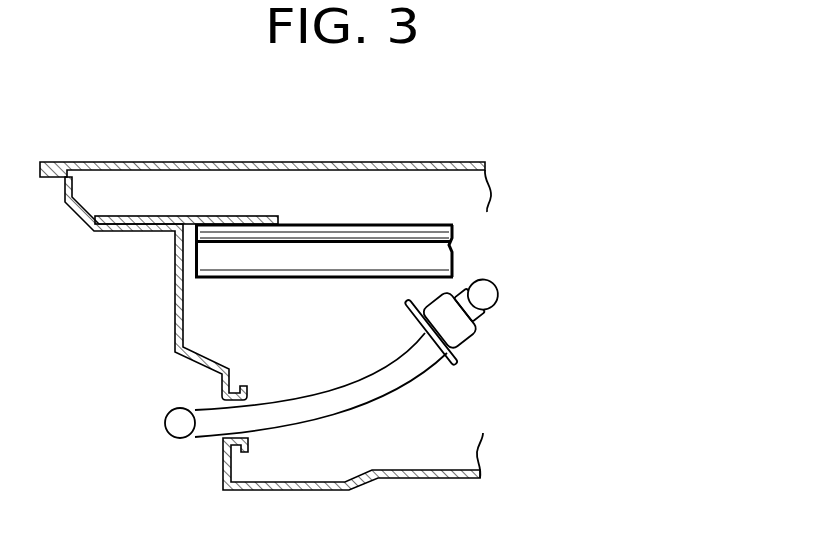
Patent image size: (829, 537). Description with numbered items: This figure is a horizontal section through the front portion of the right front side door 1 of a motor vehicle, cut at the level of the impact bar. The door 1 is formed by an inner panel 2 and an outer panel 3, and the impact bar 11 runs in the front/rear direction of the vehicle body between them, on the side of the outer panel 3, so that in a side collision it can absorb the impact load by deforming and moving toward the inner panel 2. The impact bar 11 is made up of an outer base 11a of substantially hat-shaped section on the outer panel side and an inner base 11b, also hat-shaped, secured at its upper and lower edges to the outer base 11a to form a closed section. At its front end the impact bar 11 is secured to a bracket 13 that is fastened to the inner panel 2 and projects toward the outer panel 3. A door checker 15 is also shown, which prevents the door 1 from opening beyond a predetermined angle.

The front side door 1 is at (103, 245).
The inner panel 2 is at (176, 320).
The outer panel 3 is at (143, 162).
The impact bar 11 is at (326, 218).
The outer base 11a is at (415, 224).
The inner base 11b is at (352, 278).
The bracket 13 is at (213, 216).
The door checker 15 is at (383, 389).